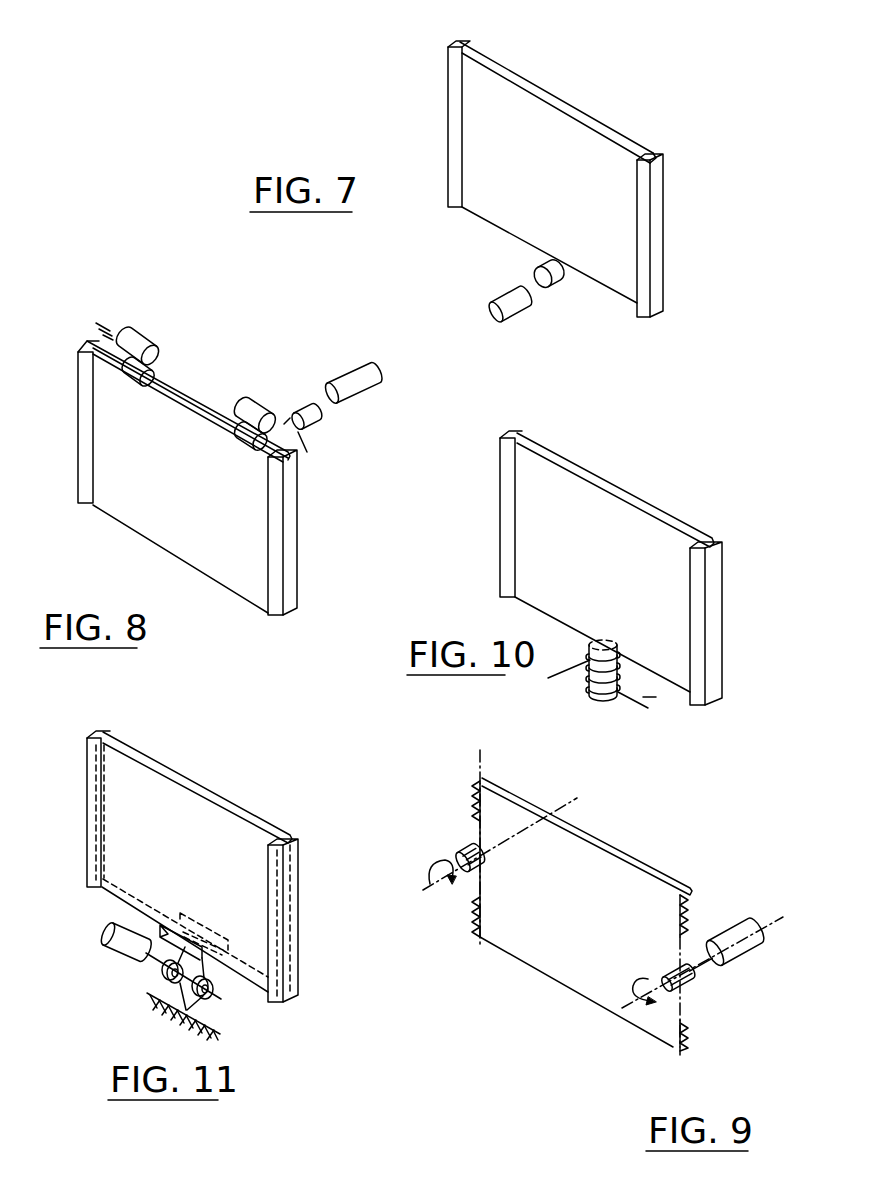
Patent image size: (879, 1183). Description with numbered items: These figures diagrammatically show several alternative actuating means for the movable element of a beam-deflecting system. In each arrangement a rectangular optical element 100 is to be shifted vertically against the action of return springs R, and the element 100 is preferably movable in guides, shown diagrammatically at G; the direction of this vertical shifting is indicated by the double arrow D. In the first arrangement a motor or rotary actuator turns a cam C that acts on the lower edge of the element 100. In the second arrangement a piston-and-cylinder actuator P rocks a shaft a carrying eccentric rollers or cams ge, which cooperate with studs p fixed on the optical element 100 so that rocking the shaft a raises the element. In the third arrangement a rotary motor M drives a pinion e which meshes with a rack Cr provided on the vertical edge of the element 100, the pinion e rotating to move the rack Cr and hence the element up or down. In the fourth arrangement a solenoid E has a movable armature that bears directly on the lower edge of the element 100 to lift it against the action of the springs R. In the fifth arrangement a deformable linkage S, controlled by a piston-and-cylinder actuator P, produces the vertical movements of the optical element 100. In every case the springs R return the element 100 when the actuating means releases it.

In FIG. 7, the optical element 100 is at (525, 158).
In FIG. 8, the optical element 100 is at (188, 483).
In FIG. 10, the optical element 100 is at (614, 562).
In FIG. 11, the optical element 100 is at (197, 862).
In FIG. 9, the optical element 100 is at (603, 902).
In FIG. 7, the guides G is at (450, 136).
In FIG. 8, the guides G is at (80, 473).
In FIG. 10, the guides G is at (611, 568).
In FIG. 11, the guides G is at (90, 797).
In FIG. 7, the return springs R is at (493, 55).
In FIG. 8, the return springs R is at (180, 568).
In FIG. 10, the return springs R is at (560, 446).
In FIG. 11, the return springs R is at (132, 740).
In FIG. 9, the return springs R is at (508, 968).
In FIG. 7, the direction of displacement D is at (405, 60).
In FIG. 8, the direction of displacement D is at (53, 368).
In FIG. 10, the direction of displacement D is at (465, 476).
In FIG. 11, the direction of displacement D is at (48, 831).
In FIG. 9, the direction of displacement D is at (423, 928).
In FIG. 7, the cam C is at (557, 282).
In FIG. 7, the rotary motor M is at (513, 306).
In FIG. 9, the rotary motor M is at (742, 932).
In FIG. 8, the shaft a is at (197, 374).
In FIG. 8, the eccentric rollers or cams ge is at (140, 335).
In FIG. 8, the studs p is at (138, 380).
In FIG. 8, the piston-and-cylinder actuator P is at (342, 424).
In FIG. 11, the piston-and-cylinder actuator P is at (122, 933).
In FIG. 10, the solenoid E is at (588, 691).
In FIG. 11, the deformable linkage S is at (126, 993).
In FIG. 9, the rack Cr is at (470, 816).
In FIG. 9, the pinion e is at (462, 857).